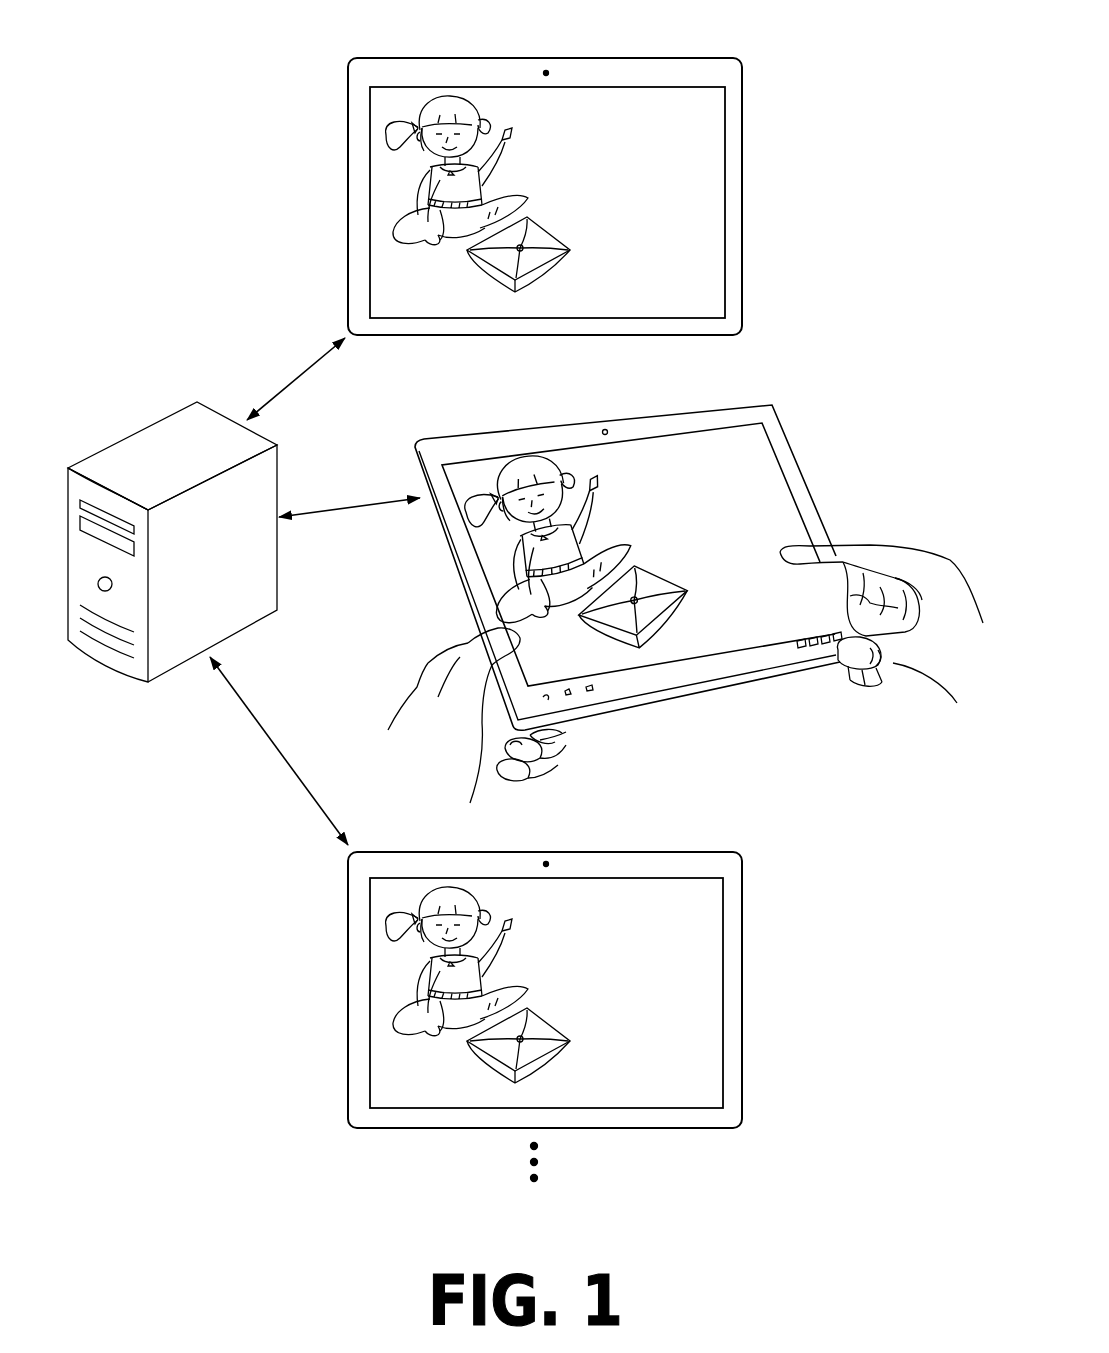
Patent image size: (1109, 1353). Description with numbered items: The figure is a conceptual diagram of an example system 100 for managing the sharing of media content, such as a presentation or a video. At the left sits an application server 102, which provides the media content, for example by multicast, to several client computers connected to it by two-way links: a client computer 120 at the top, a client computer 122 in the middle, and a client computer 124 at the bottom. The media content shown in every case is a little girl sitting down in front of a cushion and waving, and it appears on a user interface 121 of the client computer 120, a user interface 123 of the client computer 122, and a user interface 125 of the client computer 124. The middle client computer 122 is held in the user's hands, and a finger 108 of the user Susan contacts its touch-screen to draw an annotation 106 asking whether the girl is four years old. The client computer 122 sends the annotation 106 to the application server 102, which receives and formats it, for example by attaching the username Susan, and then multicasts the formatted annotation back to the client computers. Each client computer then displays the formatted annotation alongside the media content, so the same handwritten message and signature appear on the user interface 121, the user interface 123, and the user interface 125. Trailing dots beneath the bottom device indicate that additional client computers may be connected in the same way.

The system 100 is at (166, 48).
The application server 102 is at (172, 542).
The annotation 106 is at (715, 633).
The finger 108 is at (857, 545).
The client computer 120 is at (633, 193).
The user interface 121 is at (700, 155).
The client computer 122 is at (685, 592).
The user interface 123 is at (710, 578).
The client computer 124 is at (633, 987).
The user interface 125 is at (700, 949).